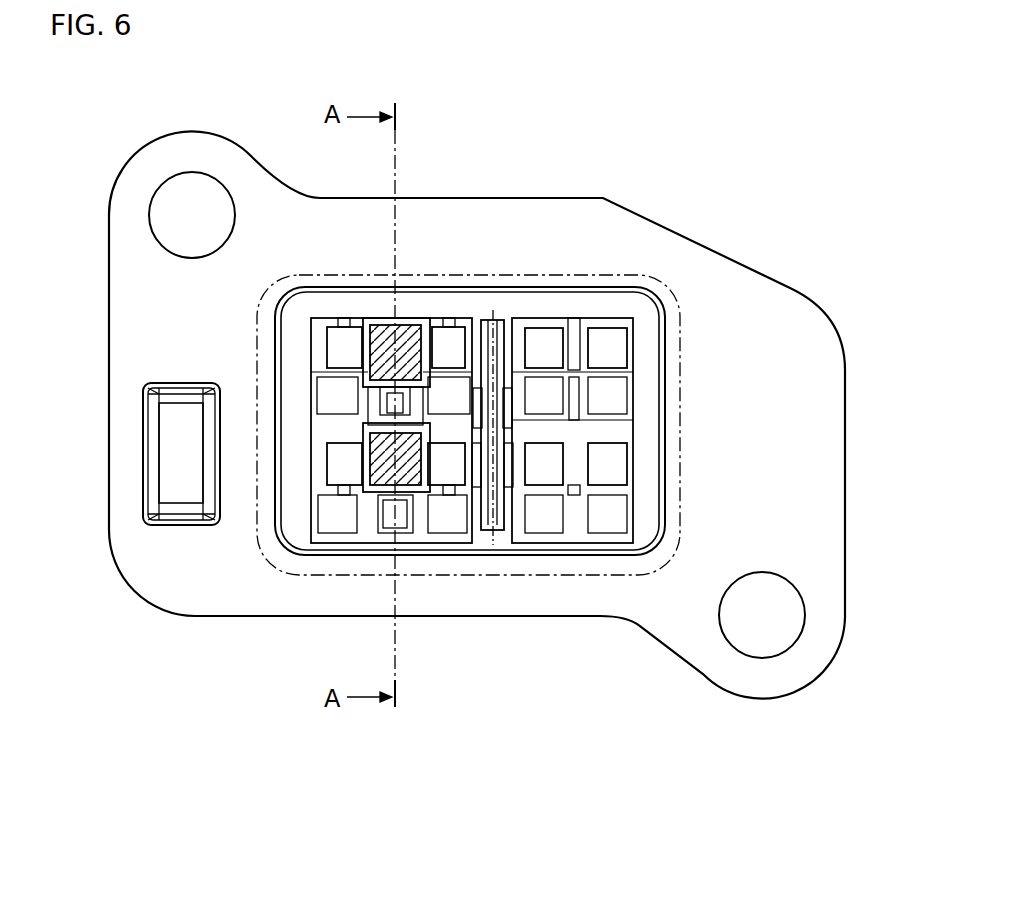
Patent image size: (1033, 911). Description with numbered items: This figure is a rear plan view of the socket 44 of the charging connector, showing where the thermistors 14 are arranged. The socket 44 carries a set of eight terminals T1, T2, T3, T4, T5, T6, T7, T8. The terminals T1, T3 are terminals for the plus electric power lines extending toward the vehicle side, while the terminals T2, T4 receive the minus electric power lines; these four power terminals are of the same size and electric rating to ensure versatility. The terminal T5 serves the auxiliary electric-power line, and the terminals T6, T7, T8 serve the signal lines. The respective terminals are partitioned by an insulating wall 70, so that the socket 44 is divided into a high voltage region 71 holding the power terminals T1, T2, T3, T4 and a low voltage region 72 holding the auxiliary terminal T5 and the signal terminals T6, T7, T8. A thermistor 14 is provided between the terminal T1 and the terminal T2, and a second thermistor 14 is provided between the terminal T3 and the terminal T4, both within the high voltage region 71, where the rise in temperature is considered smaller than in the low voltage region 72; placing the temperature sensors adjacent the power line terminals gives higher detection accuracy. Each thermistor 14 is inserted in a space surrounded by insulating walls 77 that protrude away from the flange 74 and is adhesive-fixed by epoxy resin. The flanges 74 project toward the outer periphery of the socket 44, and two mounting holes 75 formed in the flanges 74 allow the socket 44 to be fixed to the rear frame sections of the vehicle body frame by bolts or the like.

The thermistor 14 is at (383, 332).
The socket 44 is at (497, 640).
The insulating wall 70 is at (494, 340).
The high voltage region 71 is at (455, 290).
The low voltage region 72 is at (660, 278).
The flange 74 is at (822, 402).
The mounting hole 75 is at (208, 178).
The insulating wall 77 is at (405, 322).
The terminal T1 is at (338, 345).
The terminal T2 is at (452, 340).
The terminal T3 is at (338, 465).
The terminal T4 is at (440, 470).
The terminal T5 is at (547, 348).
The terminal T6 is at (545, 470).
The terminal T7 is at (610, 348).
The terminal T8 is at (612, 465).